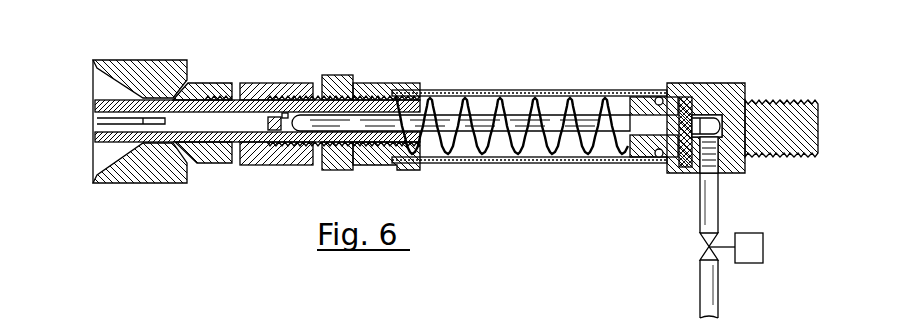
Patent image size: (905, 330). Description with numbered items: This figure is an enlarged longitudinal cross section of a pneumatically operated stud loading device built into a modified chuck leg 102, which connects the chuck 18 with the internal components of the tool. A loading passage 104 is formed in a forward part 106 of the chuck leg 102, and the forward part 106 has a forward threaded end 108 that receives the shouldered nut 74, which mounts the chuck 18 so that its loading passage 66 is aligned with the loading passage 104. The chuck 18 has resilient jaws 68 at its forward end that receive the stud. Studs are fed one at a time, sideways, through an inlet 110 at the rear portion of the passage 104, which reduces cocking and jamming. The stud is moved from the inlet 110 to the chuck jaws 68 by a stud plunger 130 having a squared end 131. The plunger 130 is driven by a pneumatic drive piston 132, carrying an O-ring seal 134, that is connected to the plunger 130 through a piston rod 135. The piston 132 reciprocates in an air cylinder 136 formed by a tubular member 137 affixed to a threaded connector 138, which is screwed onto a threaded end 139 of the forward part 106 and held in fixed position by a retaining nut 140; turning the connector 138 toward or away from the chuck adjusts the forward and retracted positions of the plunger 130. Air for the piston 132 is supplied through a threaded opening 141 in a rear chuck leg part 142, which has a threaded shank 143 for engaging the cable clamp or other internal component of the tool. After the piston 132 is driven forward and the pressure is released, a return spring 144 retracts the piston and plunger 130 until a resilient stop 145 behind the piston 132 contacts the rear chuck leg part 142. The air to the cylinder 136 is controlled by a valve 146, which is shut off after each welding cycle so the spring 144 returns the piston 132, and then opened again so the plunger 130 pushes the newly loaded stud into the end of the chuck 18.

The chuck 18 is at (108, 96).
The resilient jaws 68 is at (97, 126).
The shouldered nut 74 is at (198, 84).
The forward threaded end 108 is at (208, 99).
The forward part 106 is at (261, 78).
The retaining nut 140 is at (353, 58).
The threaded end 139 is at (372, 83).
The threaded connector 138 is at (420, 168).
The tubular member 137 is at (450, 68).
The air cylinder 136 is at (450, 158).
The inlet 110 is at (272, 132).
The squared end 131 is at (285, 114).
The stud plunger 130 is at (300, 132).
The piston rod 135 is at (580, 116).
The return spring 144 is at (538, 77).
The chuck leg 102 is at (491, 40).
The pneumatic drive piston 132 is at (648, 97).
The O-ring seal 134 is at (656, 97).
The resilient stop 145 is at (686, 168).
The rear chuck leg part 142 is at (706, 81).
The threaded shank 143 is at (782, 100).
The threaded opening 141 is at (718, 191).
The valve 146 is at (752, 234).
The loading passage 66 is at (180, 135).
The loading passage 104 is at (226, 135).